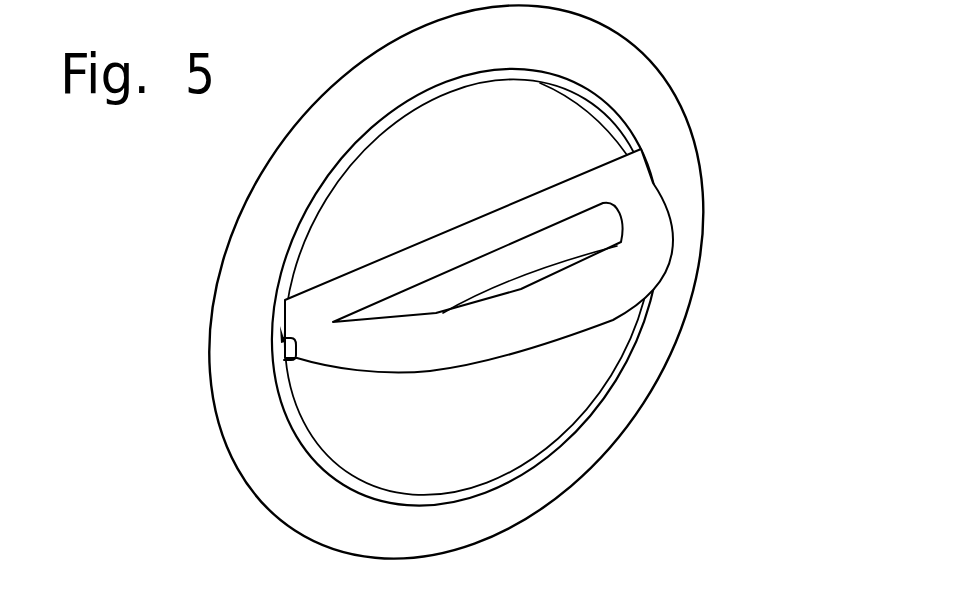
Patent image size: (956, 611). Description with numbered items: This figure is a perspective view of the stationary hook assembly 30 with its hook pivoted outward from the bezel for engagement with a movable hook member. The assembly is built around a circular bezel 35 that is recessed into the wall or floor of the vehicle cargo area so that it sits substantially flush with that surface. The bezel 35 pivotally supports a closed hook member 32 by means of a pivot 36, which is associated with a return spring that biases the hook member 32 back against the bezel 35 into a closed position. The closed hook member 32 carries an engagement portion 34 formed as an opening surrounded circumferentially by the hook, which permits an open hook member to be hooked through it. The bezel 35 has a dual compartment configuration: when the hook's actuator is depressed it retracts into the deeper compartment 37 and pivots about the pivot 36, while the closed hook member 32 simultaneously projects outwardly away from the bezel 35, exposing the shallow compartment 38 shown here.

The stationary hook assembly 30 is at (450, 305).
The closed hook member 32 is at (618, 276).
The engagement portion 34 is at (627, 180).
The bezel 35 is at (245, 460).
The pivot 36 is at (288, 365).
The deeper compartment 37 is at (535, 423).
The shallow compartment 38 is at (366, 191).